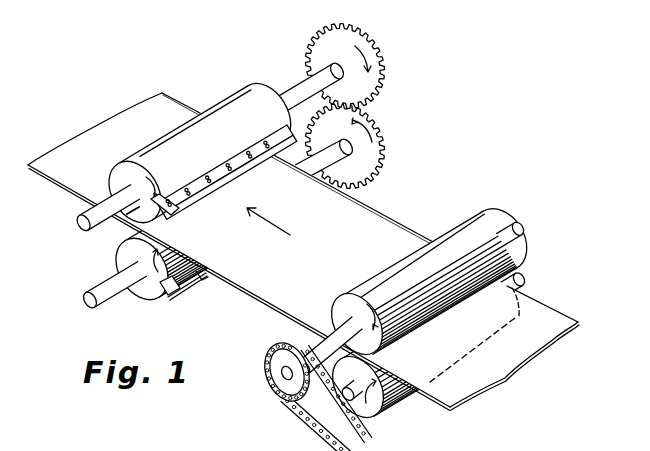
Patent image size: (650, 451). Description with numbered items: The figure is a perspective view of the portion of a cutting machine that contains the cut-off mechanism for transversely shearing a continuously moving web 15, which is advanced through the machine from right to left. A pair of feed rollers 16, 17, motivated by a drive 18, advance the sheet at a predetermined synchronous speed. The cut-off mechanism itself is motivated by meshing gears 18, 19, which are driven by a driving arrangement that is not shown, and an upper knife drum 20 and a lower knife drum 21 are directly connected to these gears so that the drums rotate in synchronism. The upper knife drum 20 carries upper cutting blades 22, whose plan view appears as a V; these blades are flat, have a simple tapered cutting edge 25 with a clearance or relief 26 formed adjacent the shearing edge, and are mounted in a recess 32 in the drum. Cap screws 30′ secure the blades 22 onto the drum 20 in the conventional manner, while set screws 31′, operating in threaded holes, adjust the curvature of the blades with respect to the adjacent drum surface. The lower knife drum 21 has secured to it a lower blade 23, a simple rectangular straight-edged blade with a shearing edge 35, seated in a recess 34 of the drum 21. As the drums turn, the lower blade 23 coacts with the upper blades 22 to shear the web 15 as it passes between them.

The continuous web 15 is at (165, 104).
The feed roller 16 is at (509, 280).
The feed roller 17 is at (485, 234).
The drive 18 is at (300, 400).
The gear 19 is at (380, 74).
The upper knife drum 20 is at (264, 96).
The lower knife drum 21 is at (141, 292).
The upper cutting blades 22 is at (268, 142).
The lower blade 23 is at (199, 280).
The tapered cutting edge 25 is at (251, 166).
The clearance or relief 26 is at (168, 214).
The cap screws 30′ is at (273, 132).
The set screws 31′ is at (281, 129).
The recess 32 is at (133, 216).
The recess 34 is at (165, 296).
The shearing edge 35 is at (176, 291).